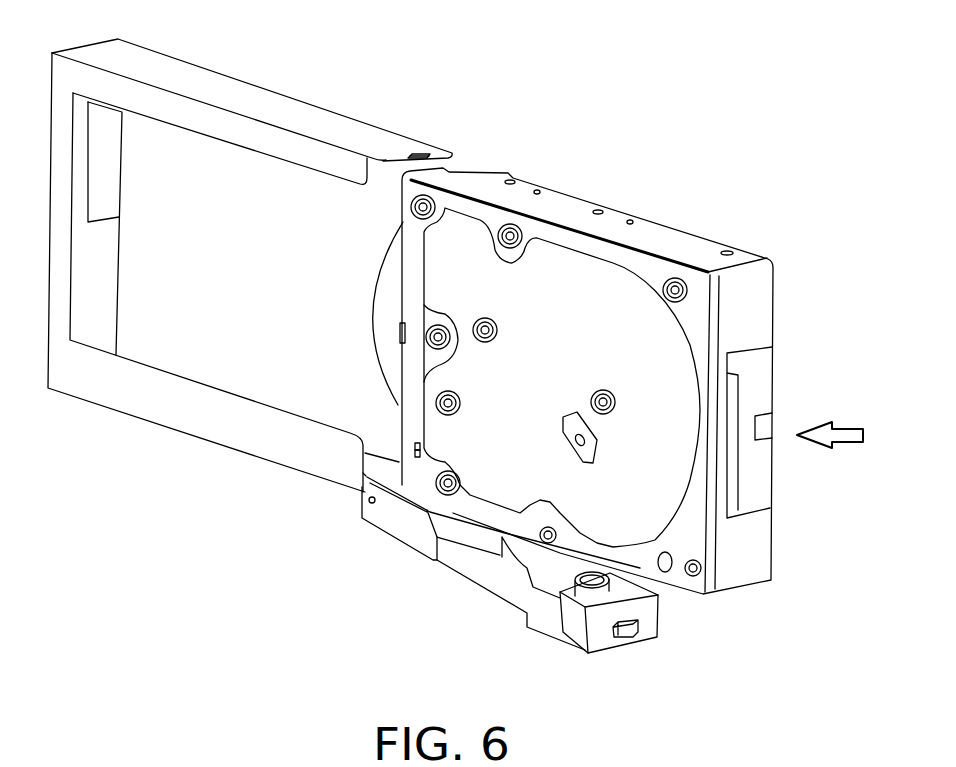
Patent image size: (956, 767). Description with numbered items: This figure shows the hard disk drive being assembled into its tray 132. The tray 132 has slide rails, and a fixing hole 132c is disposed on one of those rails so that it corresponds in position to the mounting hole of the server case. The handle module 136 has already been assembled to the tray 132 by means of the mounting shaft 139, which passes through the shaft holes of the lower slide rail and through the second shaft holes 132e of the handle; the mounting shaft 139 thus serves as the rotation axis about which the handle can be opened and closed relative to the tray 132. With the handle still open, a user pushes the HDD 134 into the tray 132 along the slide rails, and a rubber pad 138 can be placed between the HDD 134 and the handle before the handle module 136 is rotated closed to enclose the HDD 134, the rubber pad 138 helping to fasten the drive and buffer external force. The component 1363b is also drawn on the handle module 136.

The tray 132 is at (315, 118).
The fixing hole 132c is at (417, 156).
The second shaft holes 132e is at (372, 503).
The mounting shaft 139 is at (365, 500).
The HDD 134 is at (560, 275).
The handle module 136 is at (412, 537).
The rubber pad 138 is at (588, 592).
The engaging tab 1363b is at (632, 634).